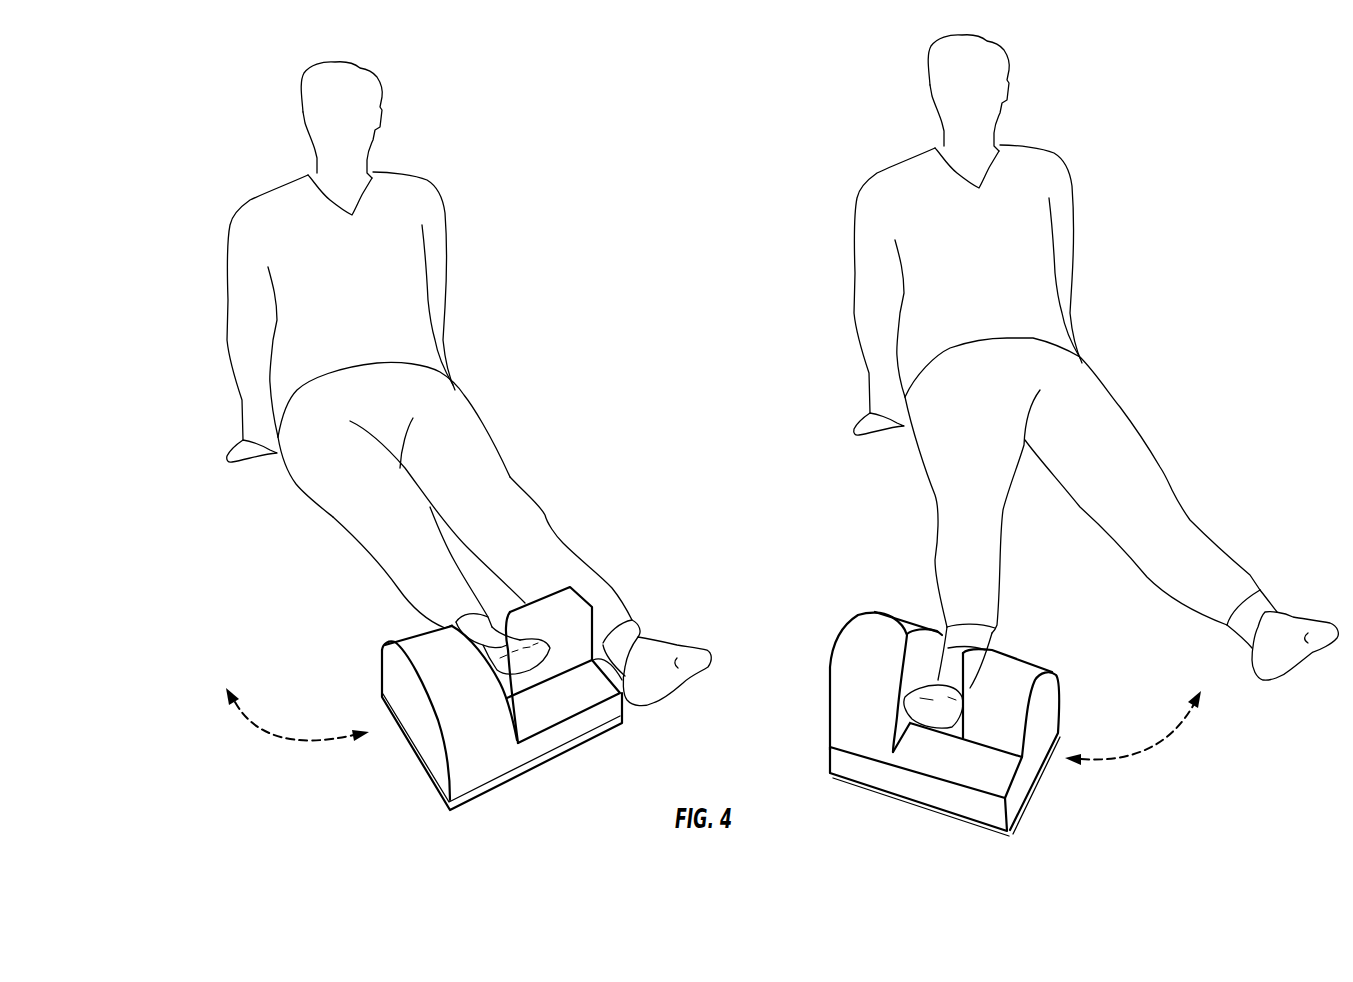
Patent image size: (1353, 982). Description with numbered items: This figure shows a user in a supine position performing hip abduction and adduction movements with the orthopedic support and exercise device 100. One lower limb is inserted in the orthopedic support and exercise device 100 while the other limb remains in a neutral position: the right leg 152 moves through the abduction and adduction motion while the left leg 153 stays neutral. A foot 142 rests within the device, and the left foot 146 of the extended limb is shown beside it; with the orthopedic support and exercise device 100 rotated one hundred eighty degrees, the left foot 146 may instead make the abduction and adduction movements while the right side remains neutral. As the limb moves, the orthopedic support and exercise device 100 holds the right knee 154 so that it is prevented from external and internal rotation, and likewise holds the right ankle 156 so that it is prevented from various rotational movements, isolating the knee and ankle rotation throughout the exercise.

The orthopedic support and exercise device 100 is at (595, 770).
The first foot 142 is at (458, 622).
The left foot 146 is at (658, 653).
The right leg 152 is at (323, 472).
The left leg 153 is at (1108, 433).
The right knee 154 is at (400, 528).
The right ankle 156 is at (495, 643).